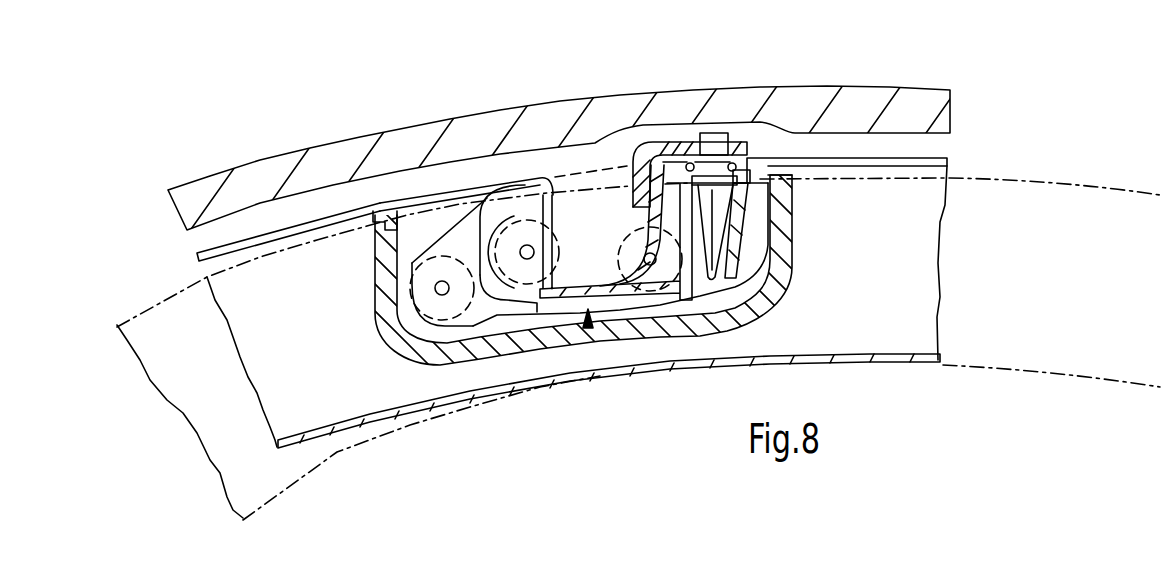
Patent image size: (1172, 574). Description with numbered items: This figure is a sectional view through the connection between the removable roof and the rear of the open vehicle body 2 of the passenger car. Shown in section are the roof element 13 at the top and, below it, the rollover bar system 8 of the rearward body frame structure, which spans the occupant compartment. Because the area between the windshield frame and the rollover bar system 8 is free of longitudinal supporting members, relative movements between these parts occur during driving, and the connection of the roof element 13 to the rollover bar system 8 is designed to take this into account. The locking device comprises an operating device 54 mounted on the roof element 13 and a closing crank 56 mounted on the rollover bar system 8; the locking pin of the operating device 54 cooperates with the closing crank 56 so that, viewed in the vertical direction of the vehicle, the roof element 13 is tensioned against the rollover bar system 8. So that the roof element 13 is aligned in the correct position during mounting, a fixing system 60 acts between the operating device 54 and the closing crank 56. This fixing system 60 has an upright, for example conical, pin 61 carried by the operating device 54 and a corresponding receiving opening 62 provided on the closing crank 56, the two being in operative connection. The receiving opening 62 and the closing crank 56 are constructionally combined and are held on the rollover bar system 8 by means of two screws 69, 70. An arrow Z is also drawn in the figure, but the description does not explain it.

The vehicle body 2 is at (371, 320).
The rollover bar system 8 is at (913, 369).
The roof element 13 is at (682, 89).
The operating device 54 is at (642, 143).
The closing crank 56 is at (510, 345).
The fixing system 60 is at (770, 293).
The pin 61 is at (723, 207).
The receiving opening 62 is at (712, 277).
The screw 69 is at (440, 296).
The screw 70 is at (664, 290).
The direction arrow Z is at (589, 328).